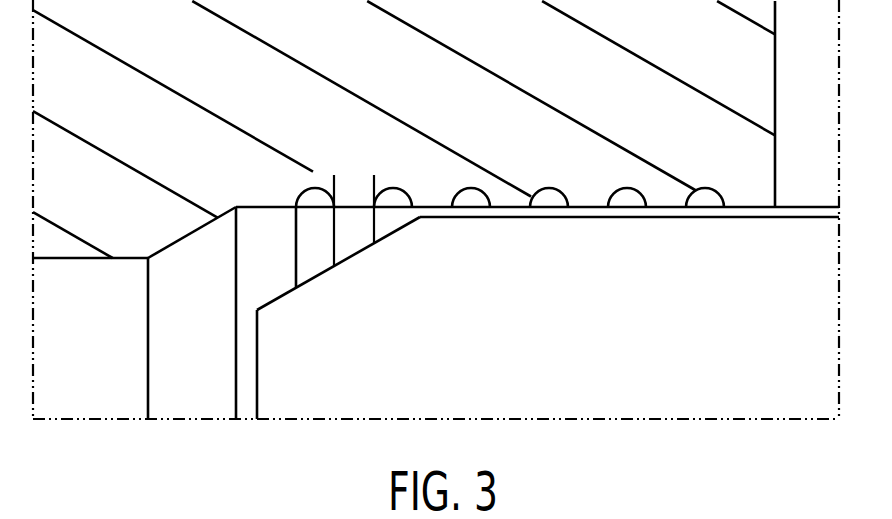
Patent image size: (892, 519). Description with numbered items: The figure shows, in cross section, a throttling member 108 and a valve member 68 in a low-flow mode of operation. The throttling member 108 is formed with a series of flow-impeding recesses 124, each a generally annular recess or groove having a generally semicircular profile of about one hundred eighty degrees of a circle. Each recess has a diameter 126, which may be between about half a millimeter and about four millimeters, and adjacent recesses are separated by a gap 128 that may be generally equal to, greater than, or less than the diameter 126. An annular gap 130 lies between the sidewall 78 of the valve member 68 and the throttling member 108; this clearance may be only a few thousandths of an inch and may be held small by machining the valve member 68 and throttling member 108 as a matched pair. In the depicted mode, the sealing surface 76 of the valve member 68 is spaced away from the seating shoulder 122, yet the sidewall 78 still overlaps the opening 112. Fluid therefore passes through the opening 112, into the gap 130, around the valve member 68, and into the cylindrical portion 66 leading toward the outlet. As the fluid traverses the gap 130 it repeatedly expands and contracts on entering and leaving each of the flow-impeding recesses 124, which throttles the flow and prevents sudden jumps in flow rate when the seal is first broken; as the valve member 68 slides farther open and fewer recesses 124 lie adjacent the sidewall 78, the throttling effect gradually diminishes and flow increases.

The cylindrical portion 66 is at (110, 322).
The valve member 68 is at (452, 344).
The sealing surface 76 is at (314, 276).
The sidewall 78 is at (808, 218).
The throttling member 108 is at (262, 102).
The opening 112 is at (827, 136).
The seating shoulder 122 is at (192, 232).
The flow-impeding recesses 124 is at (730, 157).
The diameter 126 is at (330, 207).
The gap 128 is at (338, 192).
The annular gap 130 is at (750, 174).